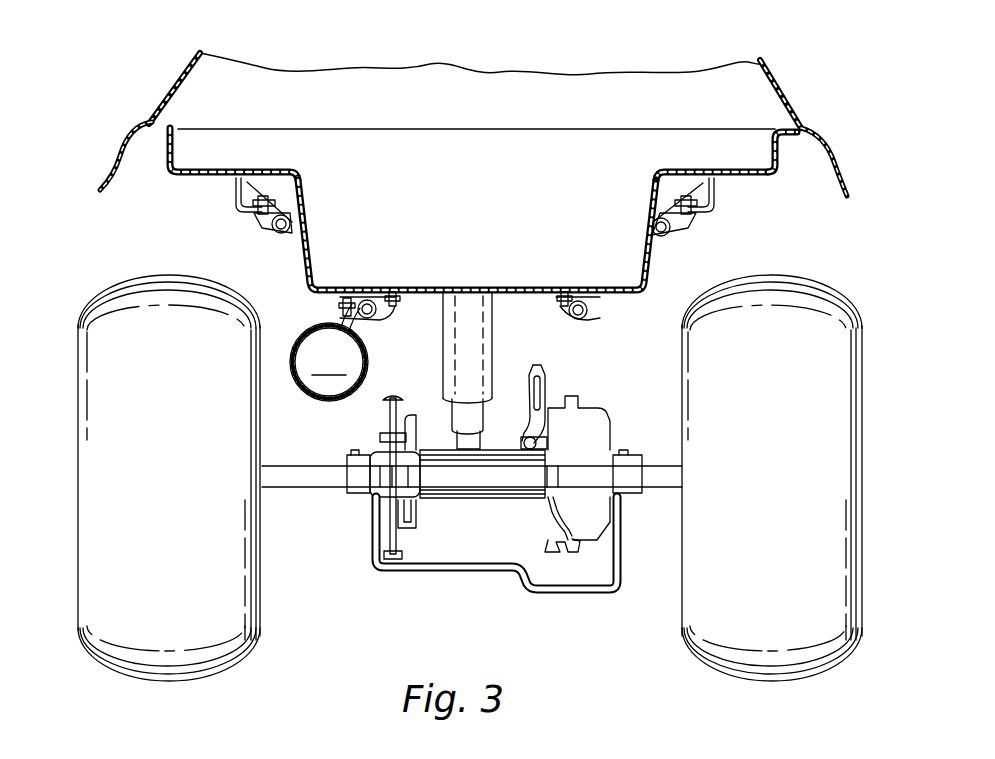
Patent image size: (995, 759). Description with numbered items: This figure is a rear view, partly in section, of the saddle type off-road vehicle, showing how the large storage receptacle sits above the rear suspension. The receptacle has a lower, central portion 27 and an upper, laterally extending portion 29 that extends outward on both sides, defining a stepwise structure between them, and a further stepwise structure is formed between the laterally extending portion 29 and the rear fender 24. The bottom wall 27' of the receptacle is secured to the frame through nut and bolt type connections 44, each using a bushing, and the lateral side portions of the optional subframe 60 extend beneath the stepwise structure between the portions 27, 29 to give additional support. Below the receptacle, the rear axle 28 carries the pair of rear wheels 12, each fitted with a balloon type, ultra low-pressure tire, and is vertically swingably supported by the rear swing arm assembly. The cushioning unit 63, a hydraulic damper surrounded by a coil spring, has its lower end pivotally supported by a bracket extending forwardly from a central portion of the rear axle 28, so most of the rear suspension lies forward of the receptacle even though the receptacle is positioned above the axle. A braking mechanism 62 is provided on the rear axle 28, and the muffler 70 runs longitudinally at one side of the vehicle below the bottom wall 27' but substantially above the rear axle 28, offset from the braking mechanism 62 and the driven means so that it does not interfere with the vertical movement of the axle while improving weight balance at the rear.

The rear wheels 12 is at (80, 540).
The rear fender 24 is at (843, 178).
The lower central portion 27 is at (426, 235).
The bottom wall 27' is at (469, 103).
The rear axle 28 is at (298, 490).
The upper laterally extending portion 29 is at (781, 154).
The connections 44 is at (389, 291).
The subframe 60 is at (654, 234).
The braking mechanism 62 is at (590, 421).
The cushioning unit 63 is at (494, 343).
The muffler 70 is at (329, 352).